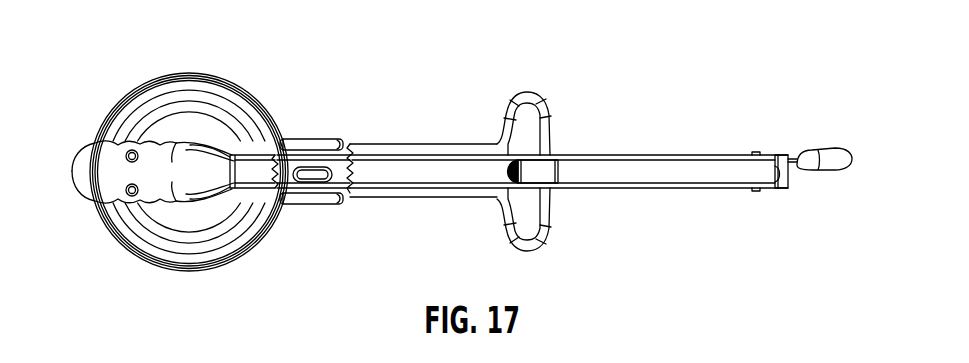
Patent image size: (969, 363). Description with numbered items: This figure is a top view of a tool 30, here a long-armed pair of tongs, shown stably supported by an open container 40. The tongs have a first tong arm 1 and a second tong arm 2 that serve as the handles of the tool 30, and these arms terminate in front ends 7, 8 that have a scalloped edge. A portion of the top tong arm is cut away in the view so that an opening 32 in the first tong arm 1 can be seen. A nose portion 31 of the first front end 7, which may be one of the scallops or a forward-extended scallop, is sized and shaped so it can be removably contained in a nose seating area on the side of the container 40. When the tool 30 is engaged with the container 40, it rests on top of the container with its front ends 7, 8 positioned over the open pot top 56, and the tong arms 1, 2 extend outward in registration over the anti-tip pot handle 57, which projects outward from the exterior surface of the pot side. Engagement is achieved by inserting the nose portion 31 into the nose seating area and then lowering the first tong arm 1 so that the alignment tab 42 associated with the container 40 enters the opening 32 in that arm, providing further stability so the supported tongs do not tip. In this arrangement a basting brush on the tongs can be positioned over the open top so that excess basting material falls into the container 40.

The first tong arm 1 is at (463, 132).
The tong arm 2 is at (447, 177).
The first front end 7 is at (210, 140).
The front end 8 is at (173, 163).
The tool 30 is at (378, 152).
The nose portion 31 is at (69, 220).
The opening 32 is at (333, 170).
The open container 40 is at (299, 242).
The alignment tab 42 is at (310, 172).
The open pot top 56 is at (131, 103).
The pot handle 57 is at (357, 198).